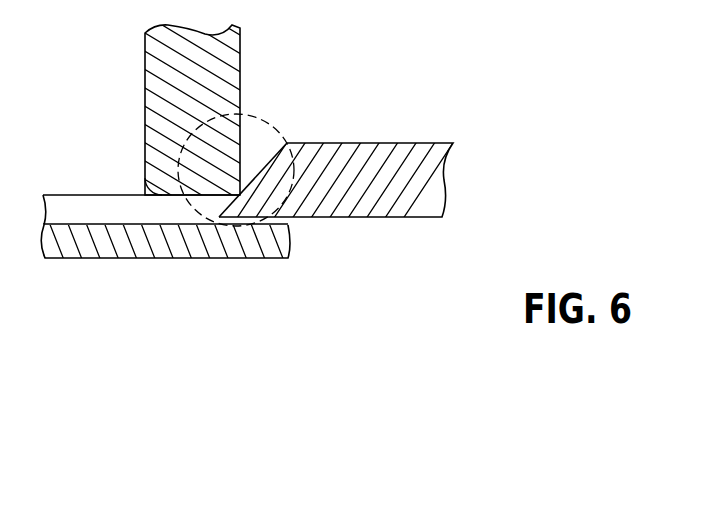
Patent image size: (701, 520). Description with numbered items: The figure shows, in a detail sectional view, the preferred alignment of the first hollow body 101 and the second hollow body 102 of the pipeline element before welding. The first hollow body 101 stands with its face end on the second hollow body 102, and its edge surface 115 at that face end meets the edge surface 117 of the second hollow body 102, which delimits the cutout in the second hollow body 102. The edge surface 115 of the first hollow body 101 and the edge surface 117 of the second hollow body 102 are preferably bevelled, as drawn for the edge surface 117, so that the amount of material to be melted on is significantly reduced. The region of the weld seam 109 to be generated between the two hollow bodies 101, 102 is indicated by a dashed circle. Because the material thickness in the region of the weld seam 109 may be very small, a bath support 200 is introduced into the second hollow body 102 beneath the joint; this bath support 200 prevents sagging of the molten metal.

The first hollow body 101 is at (166, 71).
The second hollow body 102 is at (378, 152).
The weld seam 109 is at (256, 134).
The edge surface 115 is at (143, 176).
The edge surface 117 is at (261, 173).
The bath support 200 is at (128, 248).